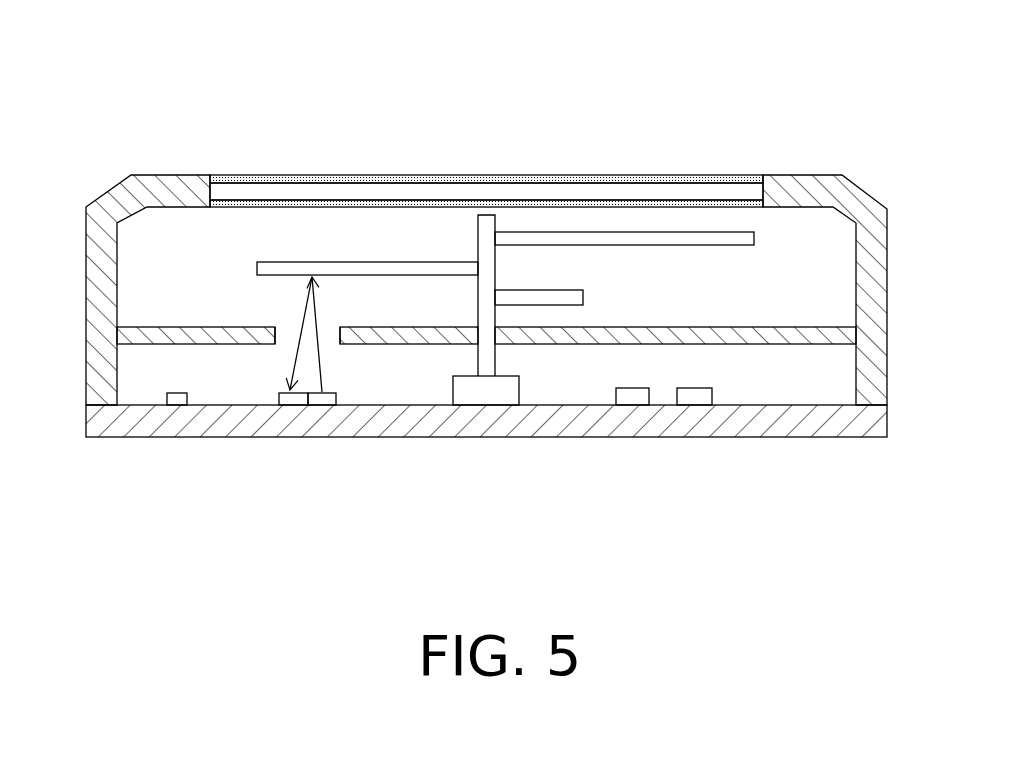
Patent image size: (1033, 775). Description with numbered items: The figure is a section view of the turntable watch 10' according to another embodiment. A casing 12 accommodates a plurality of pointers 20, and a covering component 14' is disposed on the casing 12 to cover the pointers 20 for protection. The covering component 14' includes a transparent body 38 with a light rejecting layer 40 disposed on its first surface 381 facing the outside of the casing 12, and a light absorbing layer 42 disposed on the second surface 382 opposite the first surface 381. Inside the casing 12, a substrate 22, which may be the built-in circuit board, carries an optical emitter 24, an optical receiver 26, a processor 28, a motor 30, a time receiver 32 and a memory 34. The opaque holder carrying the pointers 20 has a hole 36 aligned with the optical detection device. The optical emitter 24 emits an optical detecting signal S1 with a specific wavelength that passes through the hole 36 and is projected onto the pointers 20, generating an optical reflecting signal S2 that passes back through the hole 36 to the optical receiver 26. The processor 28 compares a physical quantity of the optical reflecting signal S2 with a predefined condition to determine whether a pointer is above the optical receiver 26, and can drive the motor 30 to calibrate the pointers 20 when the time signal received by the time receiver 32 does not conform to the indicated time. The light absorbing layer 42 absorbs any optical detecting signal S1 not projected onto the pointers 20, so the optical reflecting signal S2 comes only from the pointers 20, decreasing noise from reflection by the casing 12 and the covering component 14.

The turntable watch 10' is at (490, 251).
The casing 12 is at (829, 188).
The covering component 14 is at (490, 289).
The covering component 14' is at (446, 134).
The pointers 20 is at (433, 266).
The substrate 22 is at (815, 420).
The optical emitter 24 is at (322, 406).
The optical receiver 26 is at (290, 406).
The processor 28 is at (178, 406).
The motor 30 is at (487, 392).
The time receiver 32 is at (633, 400).
The memory 34 is at (698, 400).
The hole 36 is at (277, 322).
The transparent body 38 is at (347, 176).
The first surface 381 is at (250, 175).
The second surface 382 is at (237, 208).
The light rejecting layer 40 is at (384, 176).
The light absorbing layer 42 is at (318, 176).
The optical detecting signal S1 is at (333, 334).
The optical reflecting signal S2 is at (282, 333).